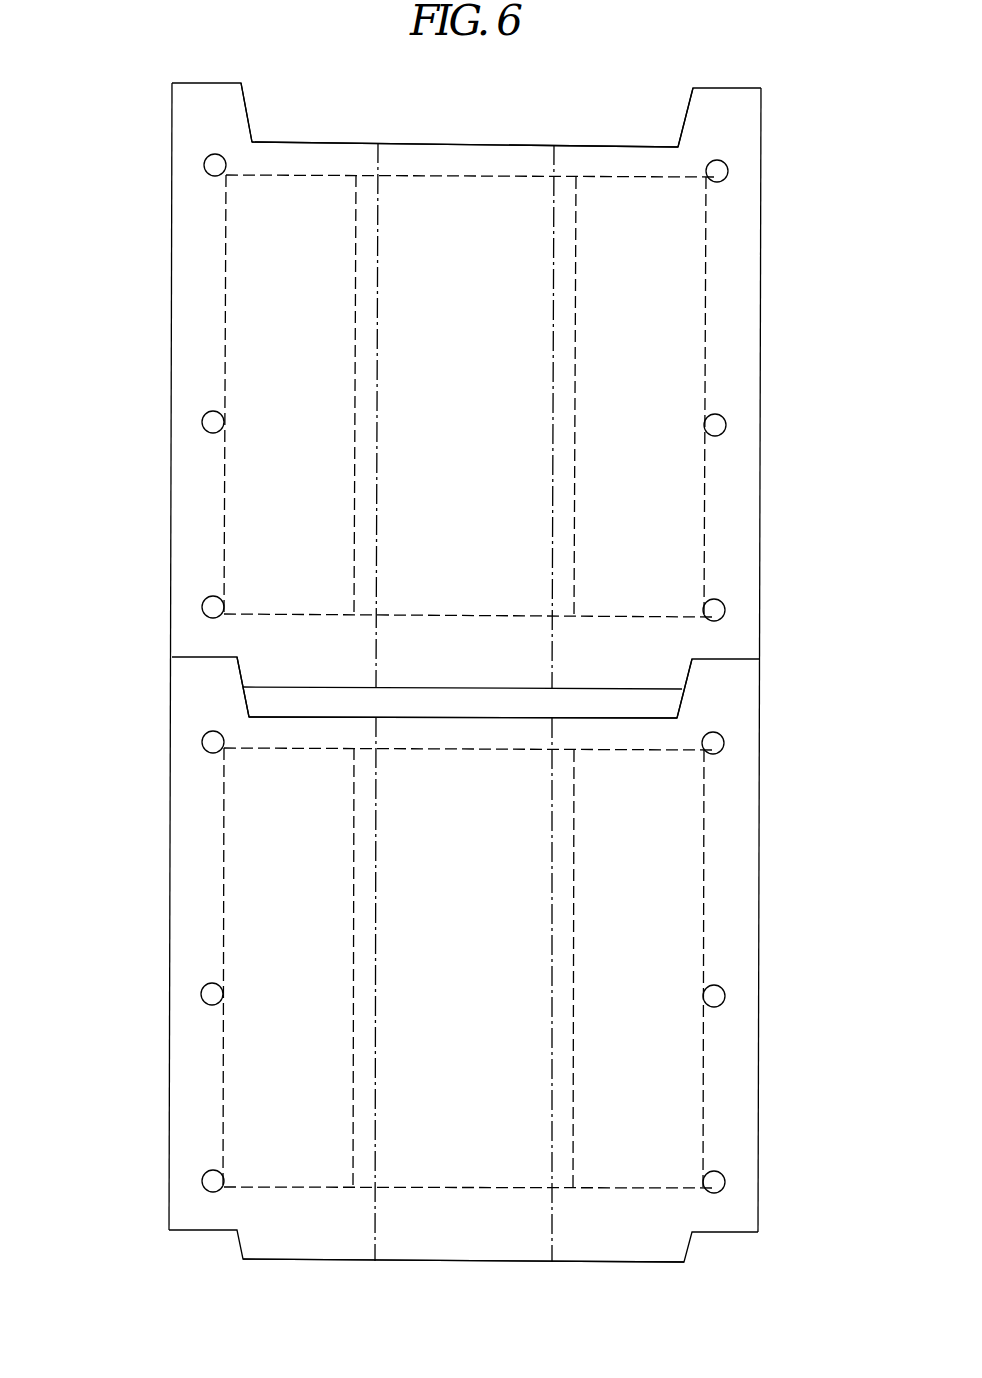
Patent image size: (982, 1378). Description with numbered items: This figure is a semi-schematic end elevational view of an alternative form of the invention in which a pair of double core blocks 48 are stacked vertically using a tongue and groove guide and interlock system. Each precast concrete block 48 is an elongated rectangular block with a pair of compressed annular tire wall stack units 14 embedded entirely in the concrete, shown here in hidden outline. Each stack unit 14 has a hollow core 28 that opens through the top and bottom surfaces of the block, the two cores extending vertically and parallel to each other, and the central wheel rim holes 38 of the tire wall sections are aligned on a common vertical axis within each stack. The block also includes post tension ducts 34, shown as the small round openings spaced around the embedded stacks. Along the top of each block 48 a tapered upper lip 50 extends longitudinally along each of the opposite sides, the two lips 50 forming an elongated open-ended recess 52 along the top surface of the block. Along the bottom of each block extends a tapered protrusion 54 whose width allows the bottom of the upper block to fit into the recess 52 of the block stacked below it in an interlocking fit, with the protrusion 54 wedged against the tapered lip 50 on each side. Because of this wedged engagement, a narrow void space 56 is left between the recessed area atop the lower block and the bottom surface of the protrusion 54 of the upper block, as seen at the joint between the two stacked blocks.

The compressed annular tire wall stack unit 14 is at (539, 681).
The hollow core 28 is at (378, 285).
The post tension duct 34 is at (215, 165).
The central wheel rim hole 38 is at (356, 228).
The double core block 48 is at (166, 284).
The tapered upper lip 50 is at (246, 113).
The elongated open-ended recess 52 is at (415, 143).
The tapered protrusion 54 is at (513, 690).
The narrow void space 56 is at (558, 704).